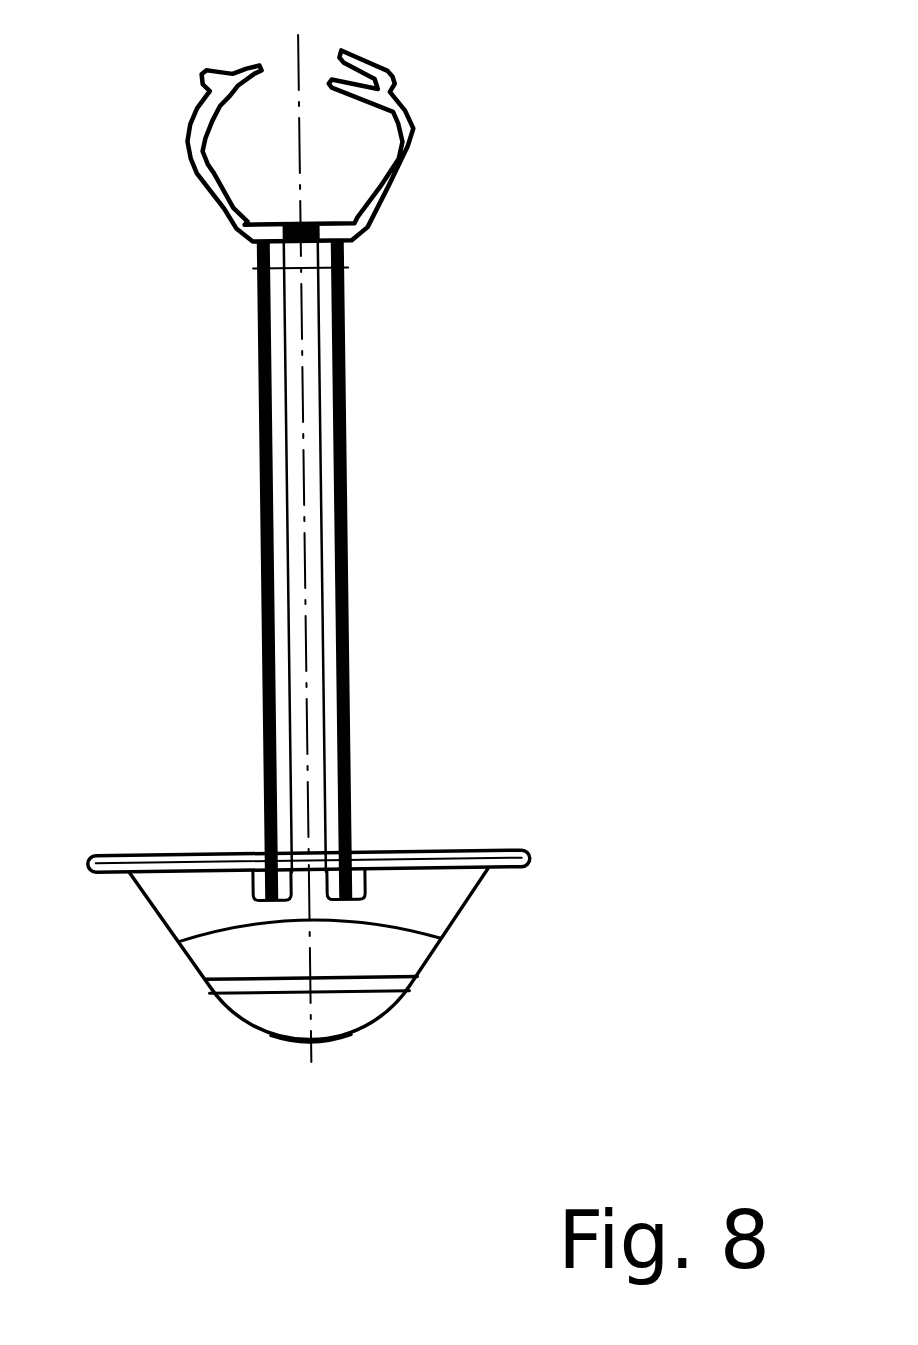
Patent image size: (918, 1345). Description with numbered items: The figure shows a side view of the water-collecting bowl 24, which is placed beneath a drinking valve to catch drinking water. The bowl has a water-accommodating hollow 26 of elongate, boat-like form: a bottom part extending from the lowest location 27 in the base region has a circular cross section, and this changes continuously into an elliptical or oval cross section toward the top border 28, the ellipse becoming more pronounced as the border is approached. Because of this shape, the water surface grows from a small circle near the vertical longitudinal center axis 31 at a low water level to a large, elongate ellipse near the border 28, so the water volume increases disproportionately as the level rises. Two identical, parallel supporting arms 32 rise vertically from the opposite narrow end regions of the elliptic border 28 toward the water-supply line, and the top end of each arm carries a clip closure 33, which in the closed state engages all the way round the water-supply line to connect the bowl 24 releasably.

The water-collecting bowl 24 is at (527, 563).
The water-accommodating hollow 26 is at (402, 970).
The lowest location 27 is at (300, 1032).
The top border 28 is at (447, 850).
The vertical longitudinal center axis 31 is at (307, 960).
The supporting arms 32 is at (313, 440).
The clip closure 33 is at (403, 110).